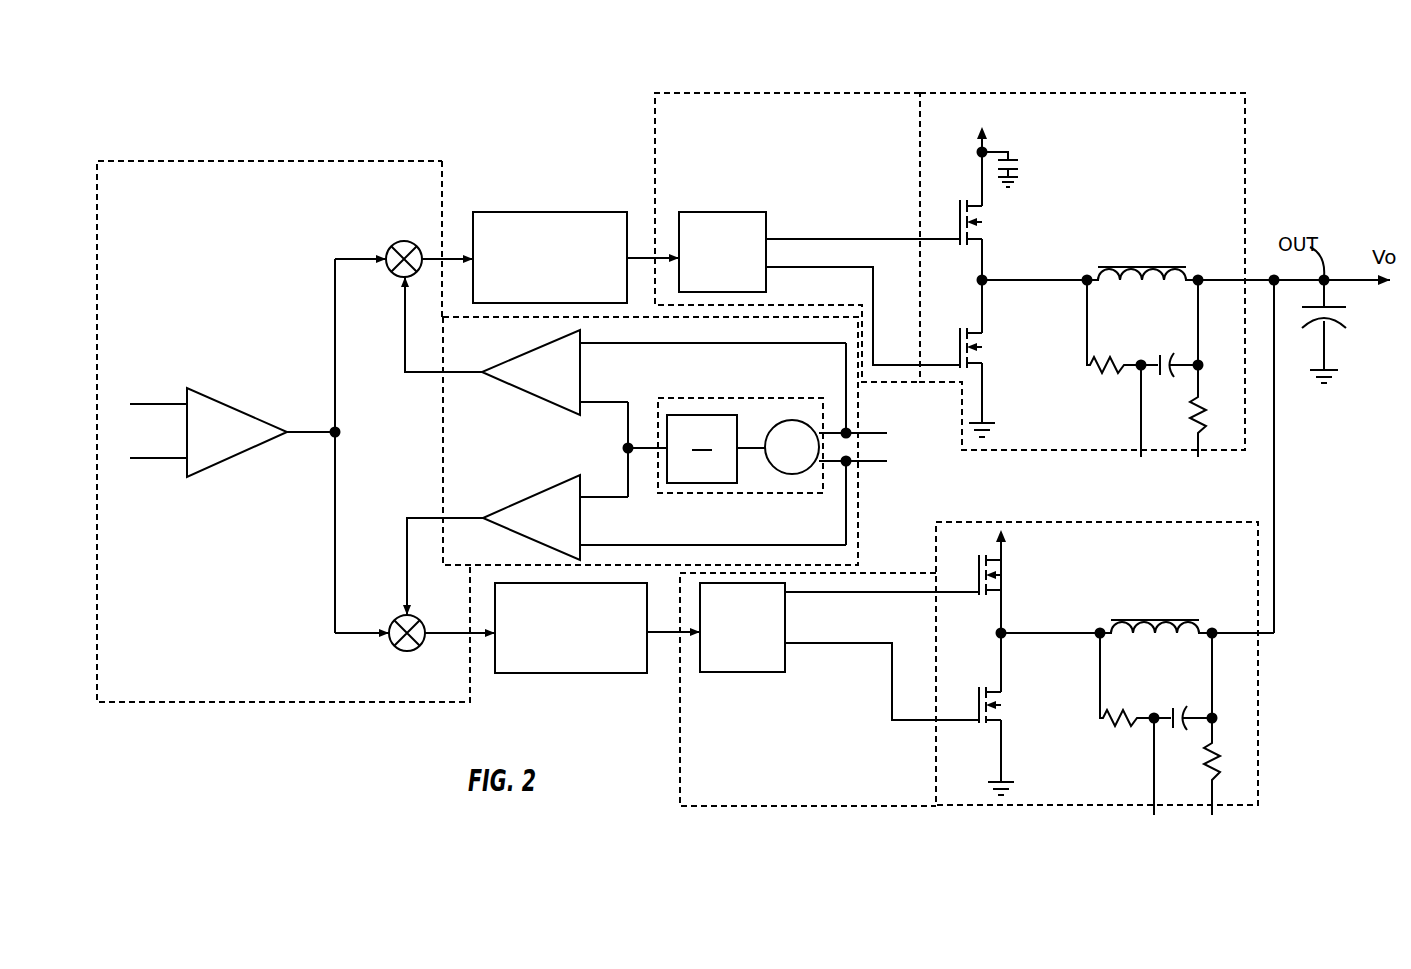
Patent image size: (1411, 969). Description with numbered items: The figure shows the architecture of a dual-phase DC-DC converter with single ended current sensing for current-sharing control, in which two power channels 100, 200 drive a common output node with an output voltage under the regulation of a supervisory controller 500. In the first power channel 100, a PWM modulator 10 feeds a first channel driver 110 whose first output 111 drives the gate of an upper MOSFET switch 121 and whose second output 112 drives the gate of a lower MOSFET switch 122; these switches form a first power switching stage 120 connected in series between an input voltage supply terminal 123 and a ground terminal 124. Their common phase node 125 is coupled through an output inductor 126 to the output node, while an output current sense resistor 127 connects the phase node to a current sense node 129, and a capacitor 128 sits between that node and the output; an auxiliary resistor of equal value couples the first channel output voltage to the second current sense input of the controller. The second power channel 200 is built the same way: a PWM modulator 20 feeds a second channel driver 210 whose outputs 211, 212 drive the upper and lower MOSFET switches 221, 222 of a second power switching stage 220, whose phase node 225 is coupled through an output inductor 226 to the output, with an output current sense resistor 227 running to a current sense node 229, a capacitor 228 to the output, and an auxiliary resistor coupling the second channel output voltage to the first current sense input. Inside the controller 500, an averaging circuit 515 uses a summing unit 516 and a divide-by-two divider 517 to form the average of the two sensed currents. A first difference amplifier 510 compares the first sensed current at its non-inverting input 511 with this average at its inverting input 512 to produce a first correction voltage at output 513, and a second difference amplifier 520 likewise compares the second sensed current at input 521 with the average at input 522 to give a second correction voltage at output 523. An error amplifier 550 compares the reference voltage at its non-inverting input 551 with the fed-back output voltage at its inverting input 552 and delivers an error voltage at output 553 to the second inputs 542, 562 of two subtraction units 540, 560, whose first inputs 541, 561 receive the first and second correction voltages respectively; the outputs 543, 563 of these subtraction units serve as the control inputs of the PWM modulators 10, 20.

The PWM modulator 10 is at (564, 212).
The PWM modulator 20 is at (549, 673).
The first power channel 100 is at (862, 93).
The first channel driver 110 is at (726, 212).
The first output of the first channel driver 111 is at (767, 239).
The second output of the first channel driver 112 is at (767, 268).
The first power switching stage 120 is at (920, 142).
The upper power semiconductor switch 121 is at (989, 217).
The lower power semiconductor switch 122 is at (981, 349).
The input voltage supply terminal 123 is at (980, 128).
The reference voltage terminal 124 is at (985, 423).
The phase node 125 is at (983, 278).
The output inductor 126 is at (1114, 282).
The output current sense resistor 127 is at (1105, 374).
The capacitor 128 is at (1164, 378).
The current sense node 129 is at (1138, 368).
The second power channel 200 is at (745, 806).
The second channel driver 210 is at (730, 673).
The first output of the second channel driver 211 is at (786, 596).
The second output of the second channel driver 212 is at (786, 646).
The second power switching stage 220 is at (935, 622).
The upper power semiconductor switch 221 is at (995, 575).
The lower power semiconductor switch 222 is at (998, 703).
The phase node 225 is at (1003, 631).
The output inductor 226 is at (1125, 633).
The output current sense resistor 227 is at (1120, 724).
The capacitor 228 is at (1178, 732).
The current sense node 229 is at (1154, 715).
The supervisory controller 500 is at (306, 161).
The first difference amplifier 510 is at (526, 356).
The non-inverting input 511 is at (582, 344).
The inverting input 512 is at (582, 402).
The output of difference amplifier 513 is at (478, 370).
The averaging circuit 515 is at (770, 398).
The summing unit 516 is at (797, 474).
The divide-by-two divider 517 is at (680, 483).
The second difference amplifier 520 is at (547, 487).
The non-inverting input 521 is at (583, 545).
The inverting input 522 is at (583, 498).
The output of difference amplifier 523 is at (479, 518).
The subtraction unit 540 is at (404, 240).
The first input of subtraction unit 541 is at (415, 276).
The second input of subtraction unit 542 is at (388, 269).
The output of subtraction unit 543 is at (424, 253).
The error amplifier 550 is at (252, 407).
The non-inverting input 551 is at (185, 396).
The inverting input 552 is at (170, 461).
The output of error amplifier 553 is at (287, 430).
The subtraction unit 560 is at (413, 650).
The first input of subtraction unit 561 is at (399, 610).
The second input of subtraction unit 562 is at (388, 641).
The output of subtraction unit 563 is at (452, 620).